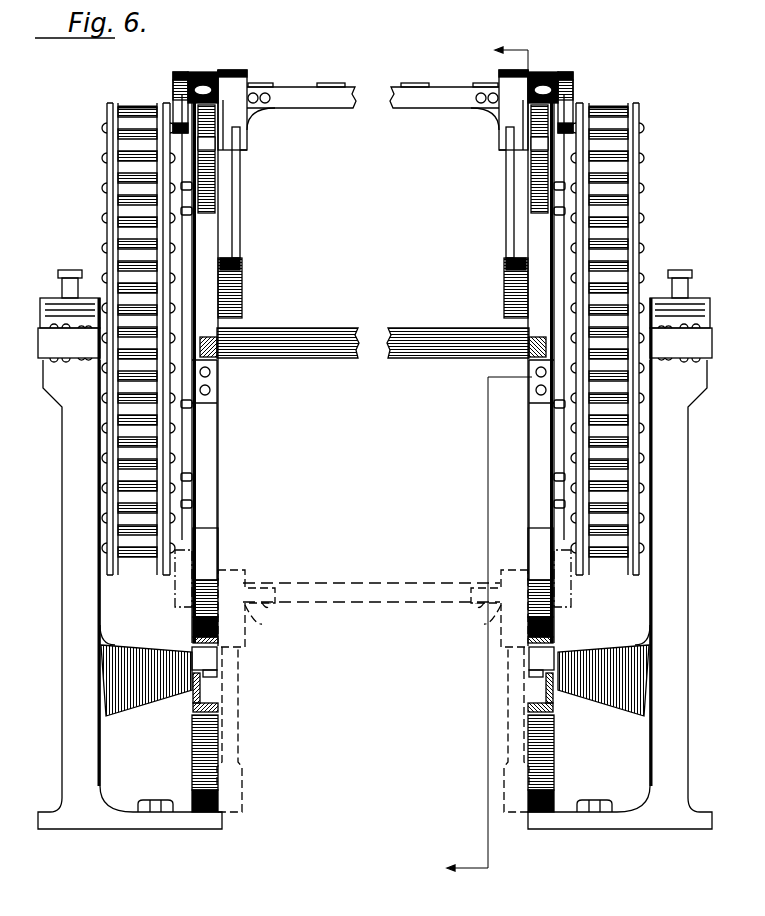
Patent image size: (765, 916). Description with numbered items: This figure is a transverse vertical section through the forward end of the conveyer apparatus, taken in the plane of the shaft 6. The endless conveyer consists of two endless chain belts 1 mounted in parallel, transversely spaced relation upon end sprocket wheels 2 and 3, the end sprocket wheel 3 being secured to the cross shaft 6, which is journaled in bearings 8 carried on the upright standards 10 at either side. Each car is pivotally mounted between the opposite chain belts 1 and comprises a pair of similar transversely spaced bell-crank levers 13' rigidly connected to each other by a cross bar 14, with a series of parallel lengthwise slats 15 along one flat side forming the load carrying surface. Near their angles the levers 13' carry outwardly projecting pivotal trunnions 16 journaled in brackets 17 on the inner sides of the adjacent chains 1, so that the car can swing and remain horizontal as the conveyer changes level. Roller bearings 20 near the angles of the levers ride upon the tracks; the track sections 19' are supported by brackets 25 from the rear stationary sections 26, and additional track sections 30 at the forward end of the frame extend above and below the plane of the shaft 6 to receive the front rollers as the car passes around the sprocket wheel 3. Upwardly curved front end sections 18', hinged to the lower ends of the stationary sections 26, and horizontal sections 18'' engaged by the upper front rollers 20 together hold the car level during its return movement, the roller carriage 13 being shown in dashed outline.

The endless chain belt 1 is at (110, 177).
The end sprocket wheel 2 is at (482, 460).
The end sprocket wheel 3 is at (133, 108).
The cross shaft 6 is at (370, 326).
The bearing 8 is at (48, 310).
The upright standard 10 is at (68, 600).
The roller carriage 13 is at (373, 349).
The bell-crank lever 13' is at (373, 469).
The cross bar 14 is at (360, 87).
The slat 15 is at (331, 83).
The pivotal trunnion 16 is at (207, 73).
The bracket 17 is at (181, 73).
The front end track section 18' is at (373, 554).
The horizontal track section 18'' is at (376, 613).
The track section 19' is at (373, 356).
The roller bearing 20 is at (218, 124).
The bracket 25 is at (196, 305).
The rear stationary section 26 is at (208, 449).
The additional track section 30 is at (195, 705).